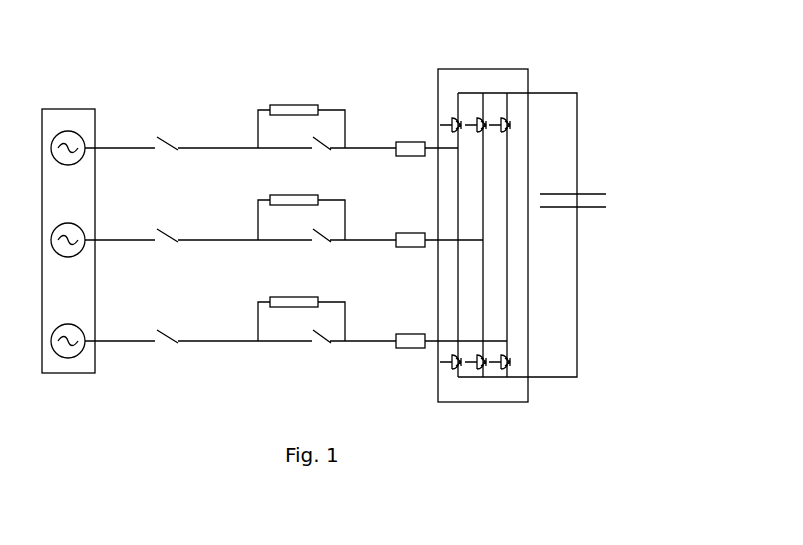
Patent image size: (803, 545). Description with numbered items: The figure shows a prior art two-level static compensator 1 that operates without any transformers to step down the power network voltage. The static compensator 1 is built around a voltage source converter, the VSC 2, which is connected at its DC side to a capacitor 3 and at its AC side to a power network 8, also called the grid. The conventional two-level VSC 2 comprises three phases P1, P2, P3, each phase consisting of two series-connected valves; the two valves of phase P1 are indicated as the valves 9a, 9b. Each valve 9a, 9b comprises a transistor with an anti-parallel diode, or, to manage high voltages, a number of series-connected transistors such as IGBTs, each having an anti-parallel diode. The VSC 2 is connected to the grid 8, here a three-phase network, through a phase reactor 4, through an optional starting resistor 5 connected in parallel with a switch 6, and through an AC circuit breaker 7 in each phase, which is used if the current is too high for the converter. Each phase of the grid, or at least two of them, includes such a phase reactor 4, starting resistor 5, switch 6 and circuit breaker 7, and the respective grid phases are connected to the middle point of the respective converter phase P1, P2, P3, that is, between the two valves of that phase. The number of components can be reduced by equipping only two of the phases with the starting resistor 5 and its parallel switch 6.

The static compensator 1 is at (592, 24).
The VSC 2 is at (519, 100).
The capacitor 3 is at (590, 193).
The phase reactor 4 is at (402, 142).
The starting resistor 5 is at (295, 105).
The switch 6 is at (319, 139).
The AC circuit breaker 7 is at (165, 143).
The power network 8 is at (47, 112).
The valve 9a is at (446, 125).
The valve 9b is at (446, 364).
The phase P1 is at (452, 118).
The phase P2 is at (482, 118).
The phase P3 is at (504, 118).